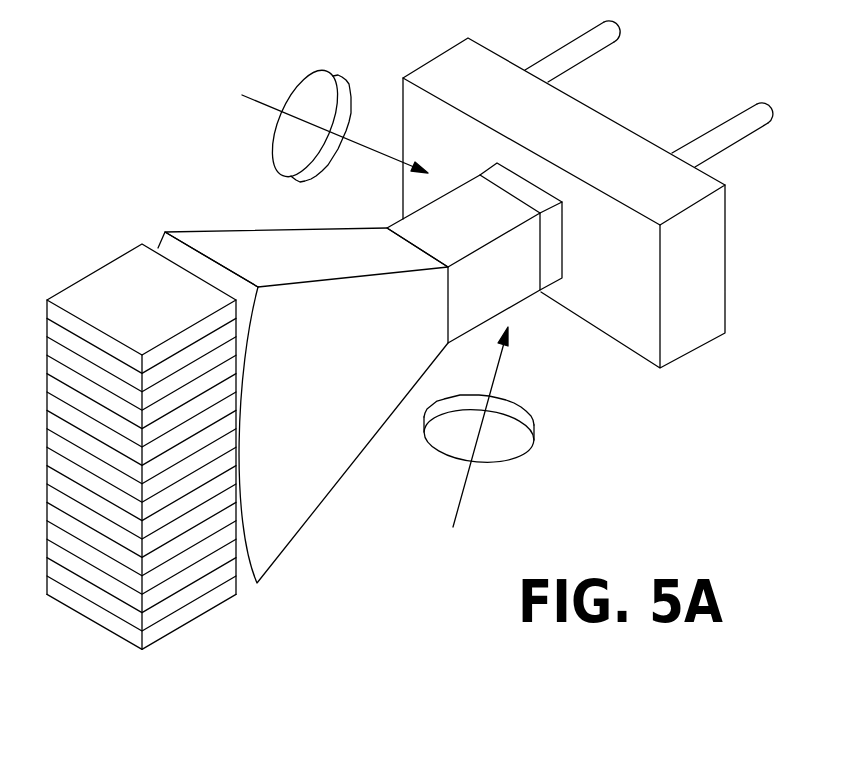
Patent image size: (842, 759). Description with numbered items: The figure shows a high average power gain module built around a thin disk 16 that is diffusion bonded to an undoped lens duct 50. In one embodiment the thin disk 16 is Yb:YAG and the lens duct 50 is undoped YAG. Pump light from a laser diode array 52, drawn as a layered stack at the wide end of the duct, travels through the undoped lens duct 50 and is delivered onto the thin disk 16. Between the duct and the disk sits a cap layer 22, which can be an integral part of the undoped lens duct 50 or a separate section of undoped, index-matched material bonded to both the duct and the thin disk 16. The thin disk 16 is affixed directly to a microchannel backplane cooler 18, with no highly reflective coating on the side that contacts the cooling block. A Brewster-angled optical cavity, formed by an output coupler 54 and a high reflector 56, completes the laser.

The thin disk 16 is at (550, 248).
The microchannel backplane cooler 18 is at (707, 267).
The cap layer 22 is at (508, 300).
The undoped lens duct 50 is at (353, 387).
The laser diode array 52 is at (88, 295).
The output coupler 54 is at (312, 90).
The high reflector 56 is at (494, 447).